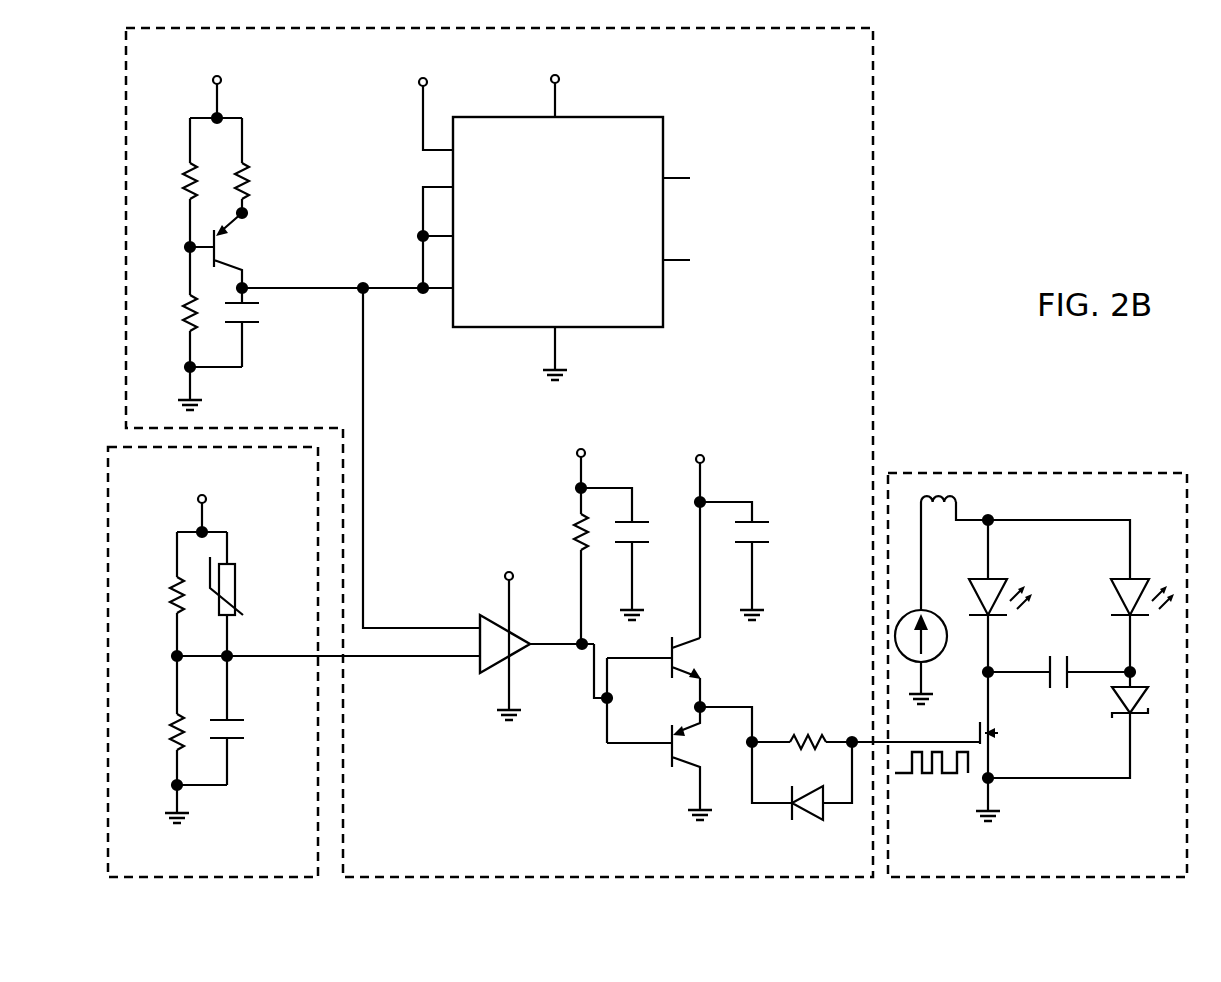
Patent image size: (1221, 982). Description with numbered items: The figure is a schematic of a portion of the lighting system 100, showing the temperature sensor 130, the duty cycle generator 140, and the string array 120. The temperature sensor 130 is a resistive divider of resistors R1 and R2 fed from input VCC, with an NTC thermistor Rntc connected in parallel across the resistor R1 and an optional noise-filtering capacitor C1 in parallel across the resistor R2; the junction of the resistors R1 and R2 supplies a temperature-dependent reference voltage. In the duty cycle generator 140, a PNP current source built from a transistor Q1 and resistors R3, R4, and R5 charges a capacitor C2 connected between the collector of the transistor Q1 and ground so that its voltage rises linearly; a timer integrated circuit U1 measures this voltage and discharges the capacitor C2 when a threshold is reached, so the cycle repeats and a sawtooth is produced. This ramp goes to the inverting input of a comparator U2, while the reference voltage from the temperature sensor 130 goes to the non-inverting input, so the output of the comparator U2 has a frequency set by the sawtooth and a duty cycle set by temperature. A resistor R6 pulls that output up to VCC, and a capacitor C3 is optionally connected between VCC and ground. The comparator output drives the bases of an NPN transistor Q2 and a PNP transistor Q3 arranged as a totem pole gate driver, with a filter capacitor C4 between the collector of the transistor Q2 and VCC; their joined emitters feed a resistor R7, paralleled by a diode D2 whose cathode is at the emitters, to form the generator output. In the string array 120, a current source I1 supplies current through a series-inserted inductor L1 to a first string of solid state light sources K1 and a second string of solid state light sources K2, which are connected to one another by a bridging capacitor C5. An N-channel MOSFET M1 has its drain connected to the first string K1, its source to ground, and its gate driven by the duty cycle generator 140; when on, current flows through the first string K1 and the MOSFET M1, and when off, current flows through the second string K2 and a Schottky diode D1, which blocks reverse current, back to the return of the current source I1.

The lighting system 100 is at (943, 203).
The string array 120 is at (1041, 675).
The temperature sensor 130 is at (225, 662).
The duty cycle generator 140 is at (564, 461).
The resistor R1 is at (158, 595).
The resistor R2 is at (158, 732).
The resistor R3 is at (172, 313).
The resistor R4 is at (172, 181).
The resistor R5 is at (261, 181).
The resistor R6 is at (566, 532).
The resistor R7 is at (809, 754).
The NTC thermistor Rntc is at (253, 586).
The capacitor C1 is at (227, 720).
The capacitor C2 is at (241, 327).
The capacitor C3 is at (630, 554).
The filter capacitor C4 is at (749, 561).
The bridging capacitor C5 is at (1059, 681).
The transistor Q1 is at (224, 250).
The NPN transistor Q2 is at (707, 672).
The PNP transistor Q3 is at (707, 763).
The timer integrated circuit U1 is at (480, 330).
The comparator U2 is at (532, 634).
The Schottky diode D1 is at (1068, 725).
The diode D2 is at (802, 793).
The first string of solid state light sources K1 is at (991, 596).
The second string of solid state light sources K2 is at (1131, 625).
The inductor L1 is at (1025, 542).
The current source I1 is at (921, 646).
The N-channel MOSFET M1 is at (961, 746).